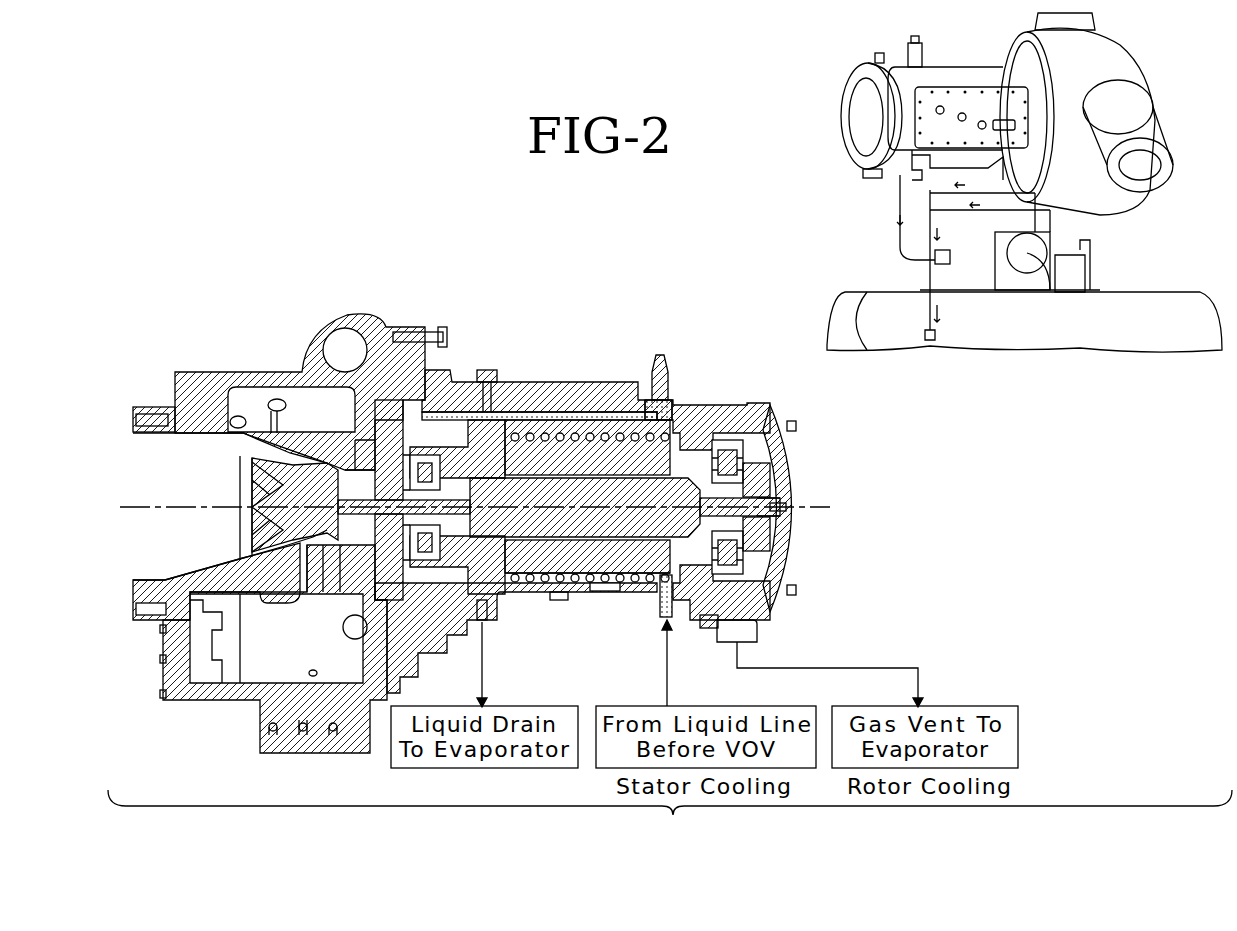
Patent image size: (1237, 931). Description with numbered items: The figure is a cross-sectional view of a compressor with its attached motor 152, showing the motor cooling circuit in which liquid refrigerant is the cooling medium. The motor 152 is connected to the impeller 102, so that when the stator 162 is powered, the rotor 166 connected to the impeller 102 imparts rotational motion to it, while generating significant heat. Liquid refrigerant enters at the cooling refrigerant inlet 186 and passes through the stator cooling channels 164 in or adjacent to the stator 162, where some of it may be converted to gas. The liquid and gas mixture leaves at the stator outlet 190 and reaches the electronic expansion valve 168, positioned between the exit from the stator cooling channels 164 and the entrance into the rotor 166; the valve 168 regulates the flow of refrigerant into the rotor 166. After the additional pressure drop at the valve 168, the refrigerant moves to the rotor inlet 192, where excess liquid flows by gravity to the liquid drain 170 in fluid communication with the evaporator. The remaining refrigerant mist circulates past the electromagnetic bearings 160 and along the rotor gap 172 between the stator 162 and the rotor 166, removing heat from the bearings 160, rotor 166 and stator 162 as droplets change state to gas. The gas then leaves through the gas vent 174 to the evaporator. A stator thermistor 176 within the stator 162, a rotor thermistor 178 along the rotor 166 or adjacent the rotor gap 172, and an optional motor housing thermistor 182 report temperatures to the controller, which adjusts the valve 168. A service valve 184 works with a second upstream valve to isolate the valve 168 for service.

The impeller 102 is at (367, 540).
The motor 152 is at (575, 383).
The electromagnetic bearings 160 is at (443, 445).
The stator 162 is at (618, 462).
The stator cooling channels 164 is at (533, 583).
The rotor 166 is at (552, 490).
The electronic expansion valve 168 is at (663, 392).
The liquid drain 170 is at (501, 653).
The rotor gap 172 is at (690, 460).
The gas vent 174 is at (708, 628).
The stator thermistor 176 is at (612, 590).
The rotor thermistor 178 is at (695, 487).
The motor housing thermistor 182 is at (562, 600).
The service valve 184 is at (485, 400).
The cooling refrigerant inlet 186 is at (660, 618).
The stator outlet 190 is at (678, 410).
The rotor inlet 192 is at (405, 430).